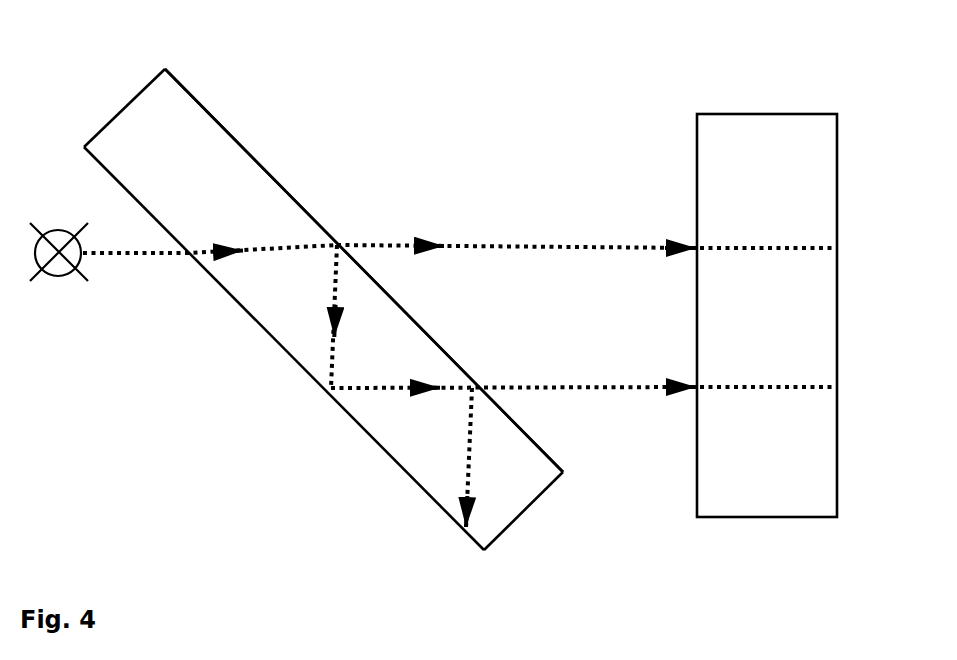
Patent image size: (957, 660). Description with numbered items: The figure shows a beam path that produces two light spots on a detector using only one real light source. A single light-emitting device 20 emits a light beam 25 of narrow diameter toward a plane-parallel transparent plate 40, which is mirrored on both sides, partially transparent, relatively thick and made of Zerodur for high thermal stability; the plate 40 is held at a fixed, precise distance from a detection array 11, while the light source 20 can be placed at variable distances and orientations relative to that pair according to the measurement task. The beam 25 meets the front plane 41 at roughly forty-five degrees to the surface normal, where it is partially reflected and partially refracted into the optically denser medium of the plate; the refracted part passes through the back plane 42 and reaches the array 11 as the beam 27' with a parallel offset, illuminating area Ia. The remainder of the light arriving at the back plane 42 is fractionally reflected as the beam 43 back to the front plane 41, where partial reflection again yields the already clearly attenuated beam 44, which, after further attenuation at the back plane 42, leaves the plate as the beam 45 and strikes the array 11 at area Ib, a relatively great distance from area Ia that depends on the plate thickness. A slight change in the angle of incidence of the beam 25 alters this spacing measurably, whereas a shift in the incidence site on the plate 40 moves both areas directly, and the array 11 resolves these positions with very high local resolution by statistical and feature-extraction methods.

The detection array 11 is at (787, 112).
The light-emitting device 20 is at (56, 278).
The light beam 25 is at (118, 263).
The beam with parallel offset 27' is at (517, 214).
The plane-parallel transparent plate 40 is at (315, 294).
The front plane 41 is at (285, 310).
The back plane 42 is at (217, 116).
The beam 43 is at (332, 345).
The beam 44 is at (380, 395).
The beam 45 is at (580, 390).